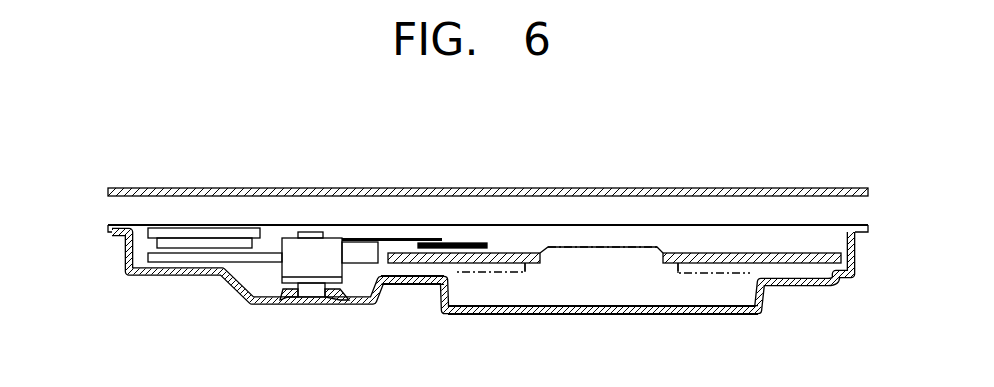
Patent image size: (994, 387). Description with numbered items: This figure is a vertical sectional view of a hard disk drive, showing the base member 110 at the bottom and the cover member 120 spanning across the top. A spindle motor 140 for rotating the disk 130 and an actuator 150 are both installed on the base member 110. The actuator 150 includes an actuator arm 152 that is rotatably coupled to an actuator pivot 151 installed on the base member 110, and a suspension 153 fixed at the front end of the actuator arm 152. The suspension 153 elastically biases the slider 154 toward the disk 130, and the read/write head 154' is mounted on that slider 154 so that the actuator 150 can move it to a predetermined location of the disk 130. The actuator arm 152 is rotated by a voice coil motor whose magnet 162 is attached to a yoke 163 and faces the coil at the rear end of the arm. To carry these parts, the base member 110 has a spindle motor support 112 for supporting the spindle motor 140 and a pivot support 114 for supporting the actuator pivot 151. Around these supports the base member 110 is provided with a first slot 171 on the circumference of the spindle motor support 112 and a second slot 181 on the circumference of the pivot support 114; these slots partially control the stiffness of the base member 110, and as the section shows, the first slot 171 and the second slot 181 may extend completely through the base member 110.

The base member 110 is at (819, 284).
The spindle motor support 112 is at (658, 313).
The pivot support 114 is at (330, 298).
The cover member 120 is at (830, 189).
The disk 130 is at (503, 276).
The spindle motor 140 is at (612, 248).
The actuator 150 is at (350, 234).
The actuator pivot 151 is at (311, 232).
The actuator arm 152 is at (390, 238).
The suspension 153 is at (452, 244).
The slider 154 is at (525, 206).
The read/write head 154' is at (634, 316).
The magnet 162 is at (230, 242).
The yoke 163 is at (188, 232).
The first slot 171 is at (419, 286).
The second slot 181 is at (268, 302).